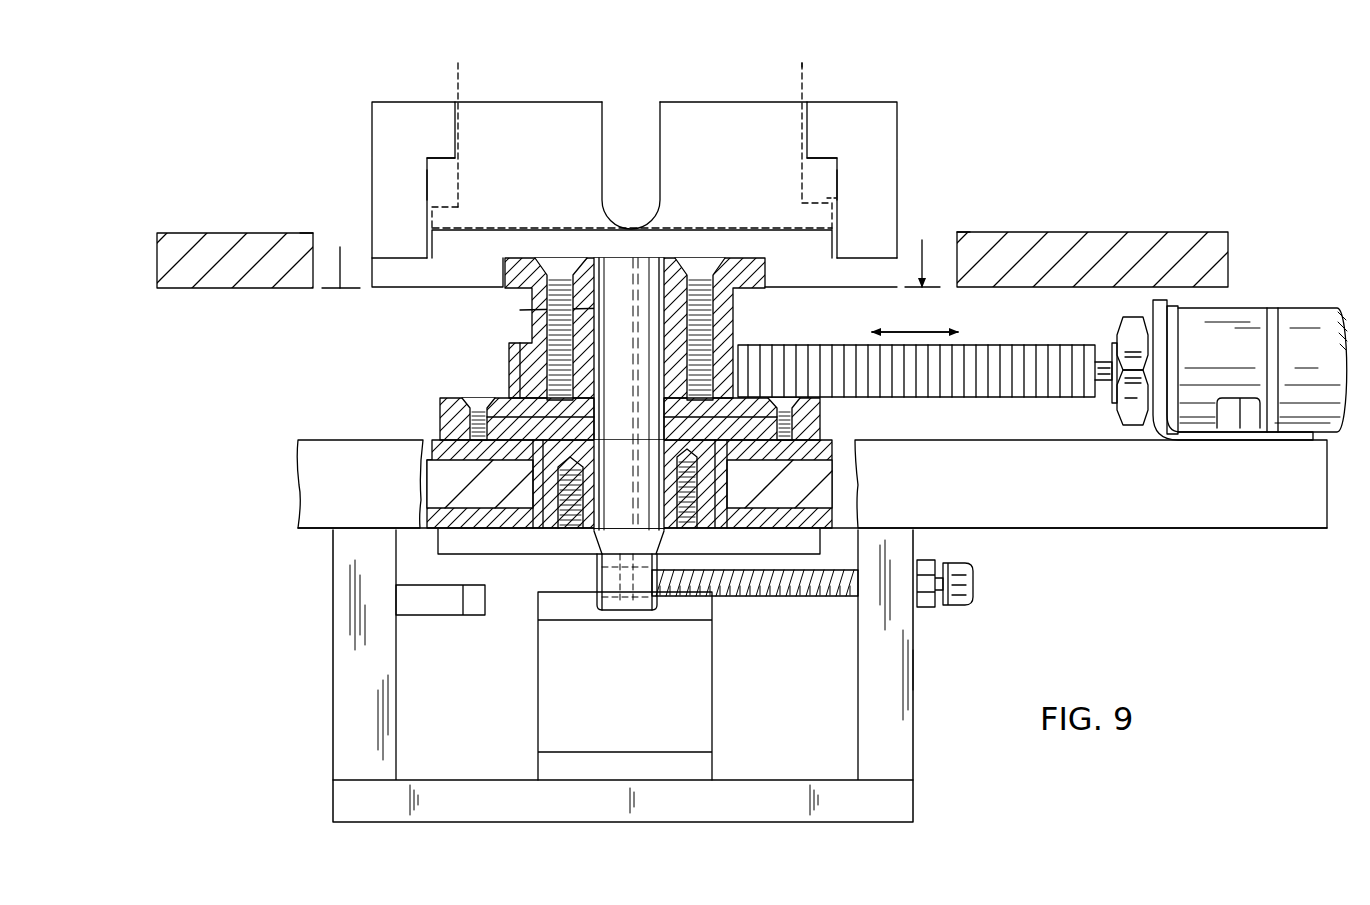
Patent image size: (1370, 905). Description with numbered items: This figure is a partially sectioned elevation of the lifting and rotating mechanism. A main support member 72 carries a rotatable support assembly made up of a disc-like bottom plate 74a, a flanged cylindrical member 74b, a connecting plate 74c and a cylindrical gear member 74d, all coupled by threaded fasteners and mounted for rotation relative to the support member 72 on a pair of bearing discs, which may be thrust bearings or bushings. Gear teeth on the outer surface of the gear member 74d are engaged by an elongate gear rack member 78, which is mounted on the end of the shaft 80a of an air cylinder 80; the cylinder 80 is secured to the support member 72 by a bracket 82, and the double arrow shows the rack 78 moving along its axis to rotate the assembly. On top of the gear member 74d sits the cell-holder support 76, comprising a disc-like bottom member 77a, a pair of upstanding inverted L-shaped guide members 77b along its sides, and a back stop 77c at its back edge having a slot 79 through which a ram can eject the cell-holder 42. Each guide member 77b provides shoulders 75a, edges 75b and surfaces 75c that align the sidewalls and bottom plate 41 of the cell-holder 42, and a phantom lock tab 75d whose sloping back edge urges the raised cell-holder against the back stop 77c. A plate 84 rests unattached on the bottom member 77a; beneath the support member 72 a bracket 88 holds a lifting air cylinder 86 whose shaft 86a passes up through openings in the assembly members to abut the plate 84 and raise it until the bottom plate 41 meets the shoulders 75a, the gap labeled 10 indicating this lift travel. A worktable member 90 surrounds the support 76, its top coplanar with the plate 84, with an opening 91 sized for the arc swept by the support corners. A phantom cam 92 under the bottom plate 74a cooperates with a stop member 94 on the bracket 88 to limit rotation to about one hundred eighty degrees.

The slot / spacing indicator 10 is at (631, 265).
The bottom plate 41 is at (836, 198).
The cell-holder 42 is at (807, 68).
The main support member 72 is at (300, 468).
The bottom plate 74a is at (438, 538).
The flanged cylindrical member 74b is at (440, 422).
The connecting plate 74c is at (820, 405).
The cylindrical gear member 74d is at (530, 325).
The shoulders 75a is at (427, 163).
The edges 75b is at (460, 117).
The surfaces 75c is at (432, 183).
The lock tab 75d is at (450, 172).
The cell-holder support 76 is at (988, 138).
The bottom member 77a is at (383, 277).
The guide members 77b is at (372, 105).
The back stop 77c is at (557, 156).
The gear rack member 78 is at (1068, 317).
The slot 79 is at (655, 123).
The air cylinder 80 is at (1247, 308).
The shaft 80a is at (1112, 347).
The bracket 82 is at (1160, 300).
The plate 84 is at (705, 230).
The air cylinder 86 is at (712, 667).
The shaft 86a is at (658, 352).
The bracket 88 is at (913, 657).
The worktable member 90 is at (180, 233).
The opening 91 is at (317, 237).
The cam 92 is at (600, 595).
The stop member 94 is at (833, 596).